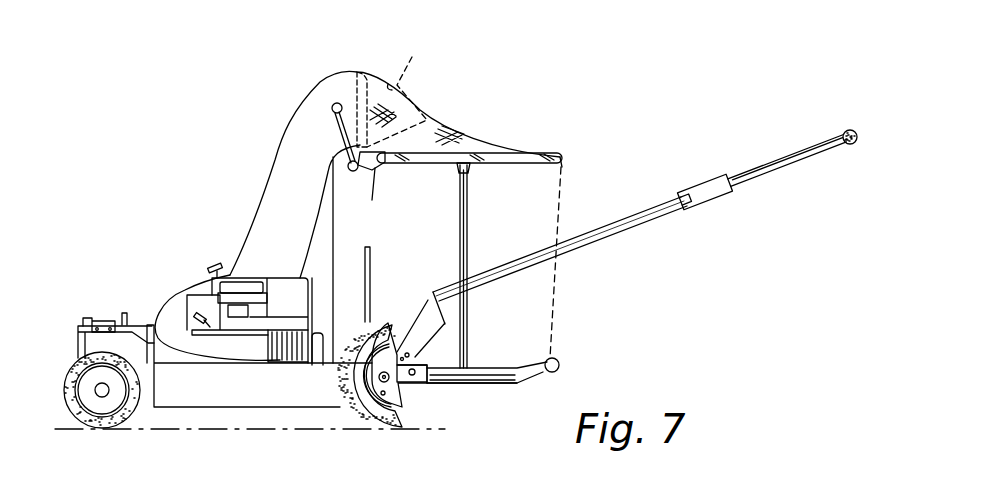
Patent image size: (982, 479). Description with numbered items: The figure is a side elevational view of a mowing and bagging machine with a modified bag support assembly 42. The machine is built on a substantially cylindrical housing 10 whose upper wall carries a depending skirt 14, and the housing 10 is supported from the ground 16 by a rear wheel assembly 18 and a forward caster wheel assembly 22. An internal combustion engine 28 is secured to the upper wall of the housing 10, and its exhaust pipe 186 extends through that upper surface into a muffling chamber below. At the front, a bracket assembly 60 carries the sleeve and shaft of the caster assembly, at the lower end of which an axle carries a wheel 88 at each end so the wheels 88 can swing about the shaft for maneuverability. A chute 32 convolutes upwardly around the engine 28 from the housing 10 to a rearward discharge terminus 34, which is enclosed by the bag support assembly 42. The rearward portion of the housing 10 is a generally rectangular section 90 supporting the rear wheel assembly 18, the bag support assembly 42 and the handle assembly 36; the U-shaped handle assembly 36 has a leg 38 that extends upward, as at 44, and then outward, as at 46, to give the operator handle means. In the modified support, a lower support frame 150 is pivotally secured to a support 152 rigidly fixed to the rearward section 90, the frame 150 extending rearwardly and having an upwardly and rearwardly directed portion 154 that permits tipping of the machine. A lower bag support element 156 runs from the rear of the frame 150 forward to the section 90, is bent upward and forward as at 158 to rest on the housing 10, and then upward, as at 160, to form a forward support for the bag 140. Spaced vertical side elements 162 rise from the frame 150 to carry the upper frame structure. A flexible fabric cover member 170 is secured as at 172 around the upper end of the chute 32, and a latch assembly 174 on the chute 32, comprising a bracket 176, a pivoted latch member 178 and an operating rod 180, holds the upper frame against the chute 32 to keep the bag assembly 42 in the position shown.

The housing 10 is at (180, 405).
The skirt 14 is at (213, 393).
The ground 16 is at (277, 433).
The rear wheel assembly 18 is at (352, 414).
The forward caster wheel assembly 22 is at (78, 316).
The internal combustion engine 28 is at (215, 260).
The chute 32 is at (292, 108).
The rearward discharge terminus 34 is at (407, 90).
The handle assembly 36 is at (702, 181).
The handle leg 38 is at (622, 228).
The bag support assembly 42 is at (568, 147).
The upward handle portion 44 is at (775, 170).
The outward handle portion 46 is at (850, 145).
The bracket assembly 60 is at (141, 324).
The wheel 88 is at (107, 420).
The rectangular section 90 is at (402, 407).
The bag 140 is at (573, 198).
The lower support frame 150 is at (483, 372).
The support 152 is at (415, 381).
The upwardly and rearwardly directed portion 154 is at (560, 370).
The lower bag support element 156 is at (487, 385).
The forwardly bent portion 158 is at (420, 335).
The upwardly bent portion 160 is at (370, 266).
The vertical side element 162 is at (468, 214).
The flexible cover member 170 is at (444, 110).
The cover securement 172 is at (358, 70).
The latch assembly 174 is at (388, 174).
The bracket 176 is at (352, 174).
The latch member 178 is at (373, 168).
The operating rod 180 is at (341, 131).
The exhaust pipe 186 is at (318, 366).